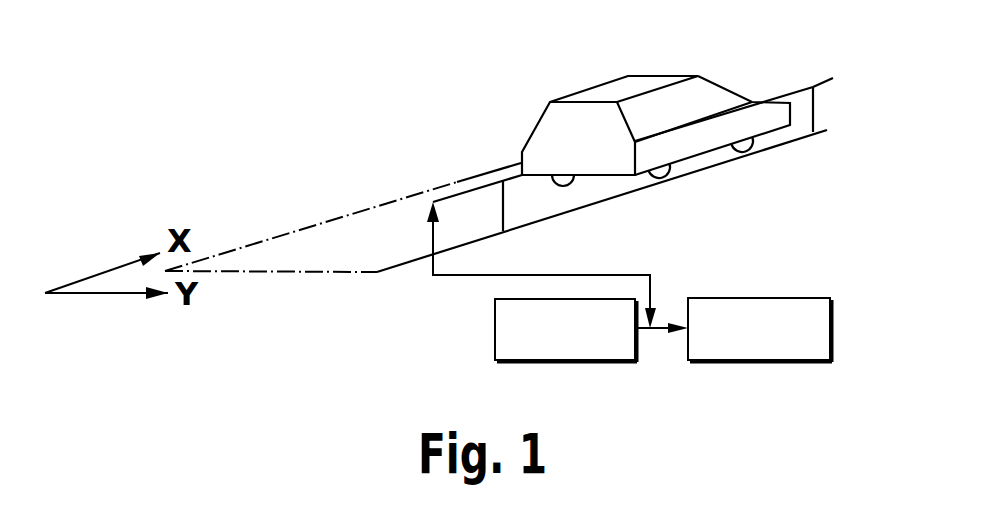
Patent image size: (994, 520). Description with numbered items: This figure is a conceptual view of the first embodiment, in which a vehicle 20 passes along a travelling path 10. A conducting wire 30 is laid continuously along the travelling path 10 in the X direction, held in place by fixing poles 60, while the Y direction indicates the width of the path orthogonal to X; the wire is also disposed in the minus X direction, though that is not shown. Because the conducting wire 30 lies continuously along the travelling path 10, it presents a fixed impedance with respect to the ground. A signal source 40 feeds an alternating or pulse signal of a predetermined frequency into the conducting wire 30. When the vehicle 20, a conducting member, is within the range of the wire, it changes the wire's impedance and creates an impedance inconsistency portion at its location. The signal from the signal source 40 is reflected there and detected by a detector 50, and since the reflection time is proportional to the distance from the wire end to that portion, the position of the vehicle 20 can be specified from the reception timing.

The travelling path 10 is at (327, 220).
The vehicle 20 is at (548, 102).
The conducting wire 30 is at (830, 78).
The signal source 40 is at (495, 320).
The detector 50 is at (758, 298).
The fixing poles 60 is at (815, 107).